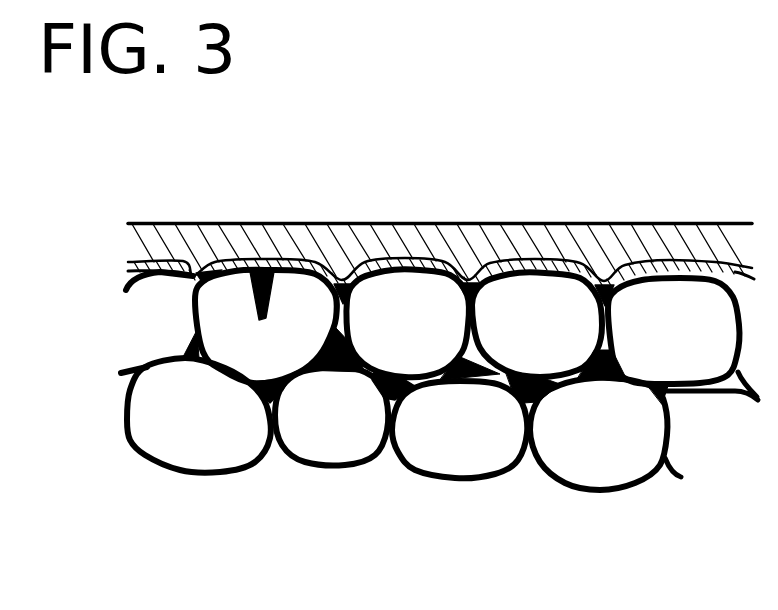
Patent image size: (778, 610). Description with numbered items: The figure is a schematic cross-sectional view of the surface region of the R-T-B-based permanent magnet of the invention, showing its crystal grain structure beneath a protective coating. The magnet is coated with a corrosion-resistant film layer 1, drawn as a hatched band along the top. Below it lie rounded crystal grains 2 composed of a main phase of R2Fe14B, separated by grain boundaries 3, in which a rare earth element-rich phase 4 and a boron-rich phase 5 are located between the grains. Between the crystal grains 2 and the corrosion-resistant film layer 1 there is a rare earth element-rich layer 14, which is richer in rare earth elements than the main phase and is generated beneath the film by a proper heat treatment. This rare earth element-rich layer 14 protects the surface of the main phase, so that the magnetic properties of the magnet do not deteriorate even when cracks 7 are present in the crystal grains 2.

The corrosion-resistant film layer 1 is at (537, 224).
The rare earth element-rich layer 14 is at (265, 258).
The cracks 7 is at (262, 300).
The crystal grains 2 is at (439, 370).
The grain boundaries 3 is at (502, 474).
The rare earth element-rich phase 4 is at (380, 405).
The boron-rich phase 5 is at (262, 405).